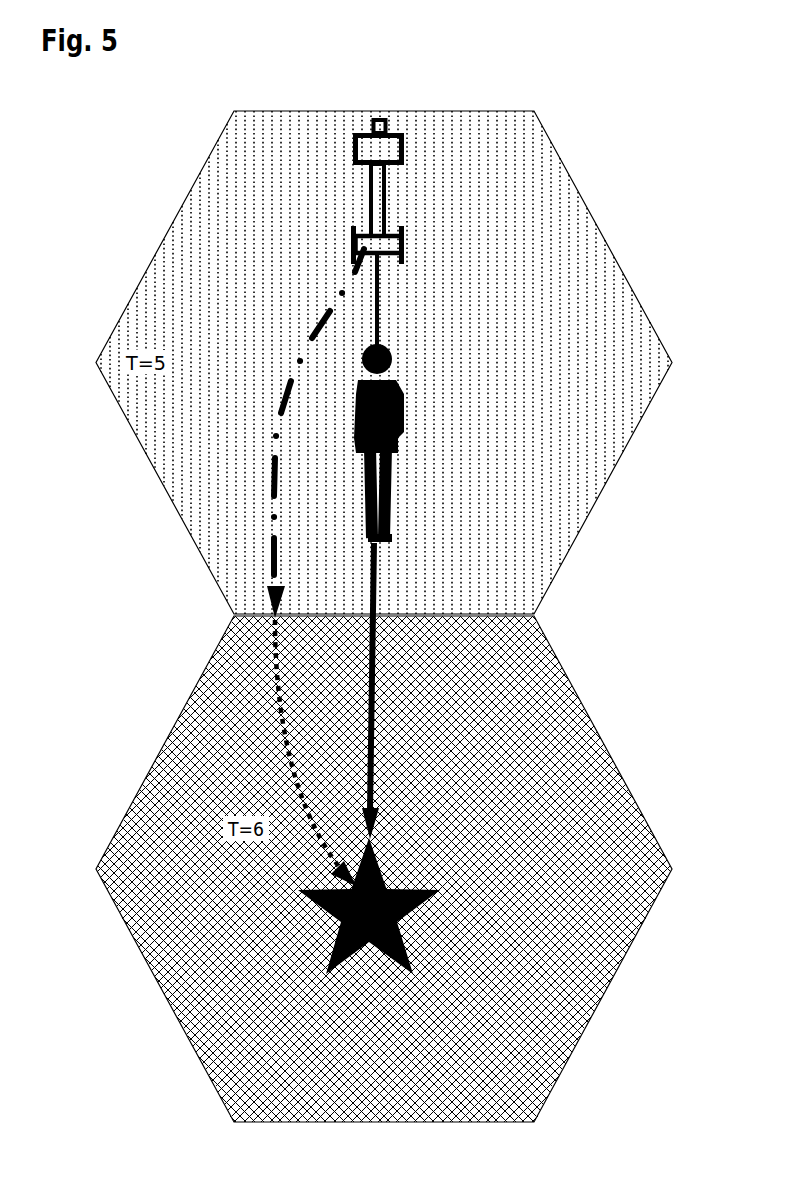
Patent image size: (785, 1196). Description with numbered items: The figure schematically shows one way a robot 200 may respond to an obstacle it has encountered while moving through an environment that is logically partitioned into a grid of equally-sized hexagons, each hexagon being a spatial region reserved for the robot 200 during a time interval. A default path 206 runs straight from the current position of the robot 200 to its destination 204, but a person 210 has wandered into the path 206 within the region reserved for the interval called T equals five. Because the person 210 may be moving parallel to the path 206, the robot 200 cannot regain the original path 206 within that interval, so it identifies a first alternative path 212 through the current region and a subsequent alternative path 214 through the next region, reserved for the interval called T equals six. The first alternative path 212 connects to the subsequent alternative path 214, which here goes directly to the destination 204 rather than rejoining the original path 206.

The robot 200 is at (434, 148).
The destination 204 is at (360, 937).
The path 206 is at (367, 568).
The person 210 is at (397, 390).
The alternative path 212 is at (300, 322).
The subsequent alternative path 214 is at (268, 678).